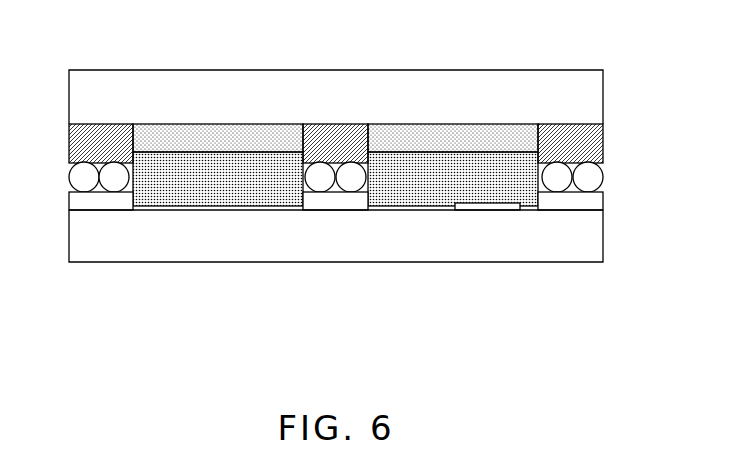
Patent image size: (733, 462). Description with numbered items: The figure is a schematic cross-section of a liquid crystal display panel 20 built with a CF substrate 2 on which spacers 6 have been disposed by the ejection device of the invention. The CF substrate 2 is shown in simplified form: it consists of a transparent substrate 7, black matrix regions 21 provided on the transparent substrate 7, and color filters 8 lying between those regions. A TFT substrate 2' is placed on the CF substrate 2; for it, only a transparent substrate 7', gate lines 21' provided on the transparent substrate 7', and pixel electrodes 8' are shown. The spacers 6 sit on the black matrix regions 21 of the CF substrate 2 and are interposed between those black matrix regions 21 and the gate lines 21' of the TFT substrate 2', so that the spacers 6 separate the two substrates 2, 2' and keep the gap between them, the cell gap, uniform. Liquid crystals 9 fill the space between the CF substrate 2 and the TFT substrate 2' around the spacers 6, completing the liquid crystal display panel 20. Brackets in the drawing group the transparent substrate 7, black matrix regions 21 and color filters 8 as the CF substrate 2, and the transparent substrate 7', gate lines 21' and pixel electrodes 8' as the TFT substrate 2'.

The CF substrate 2 is at (630, 115).
The TFT substrate 2' is at (632, 228).
The spacers 6 is at (360, 177).
The transparent substrate 7 is at (316, 97).
The transparent substrate 7' is at (315, 236).
The color filters 8 is at (335, 84).
The pixel electrodes 8' is at (487, 257).
The liquid crystals 9 is at (196, 180).
The liquid crystal display panel 20 is at (622, 307).
The black matrix regions 21 is at (310, 143).
The gate lines 21' is at (309, 249).